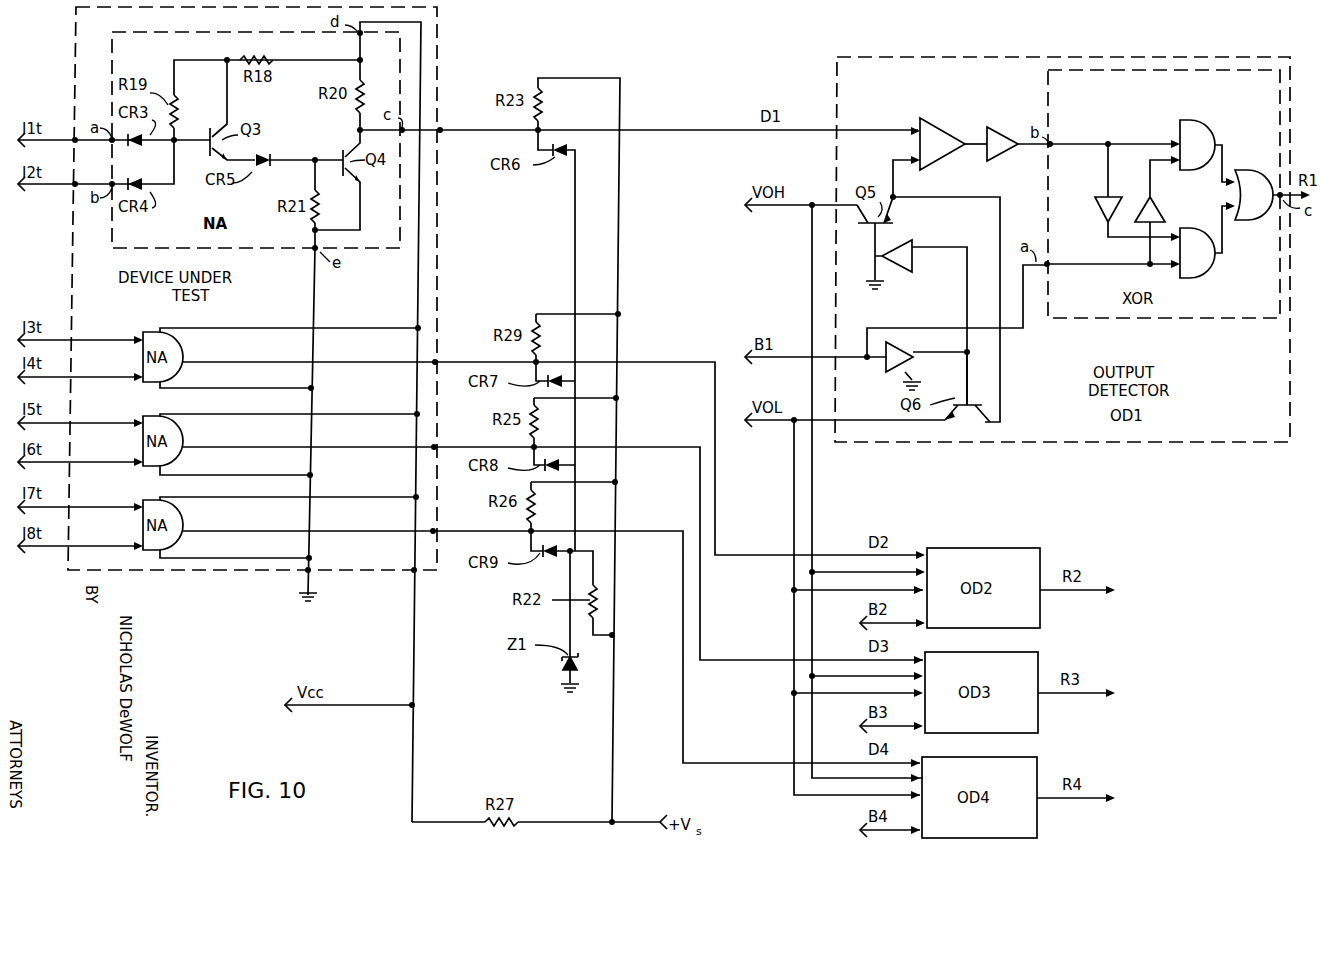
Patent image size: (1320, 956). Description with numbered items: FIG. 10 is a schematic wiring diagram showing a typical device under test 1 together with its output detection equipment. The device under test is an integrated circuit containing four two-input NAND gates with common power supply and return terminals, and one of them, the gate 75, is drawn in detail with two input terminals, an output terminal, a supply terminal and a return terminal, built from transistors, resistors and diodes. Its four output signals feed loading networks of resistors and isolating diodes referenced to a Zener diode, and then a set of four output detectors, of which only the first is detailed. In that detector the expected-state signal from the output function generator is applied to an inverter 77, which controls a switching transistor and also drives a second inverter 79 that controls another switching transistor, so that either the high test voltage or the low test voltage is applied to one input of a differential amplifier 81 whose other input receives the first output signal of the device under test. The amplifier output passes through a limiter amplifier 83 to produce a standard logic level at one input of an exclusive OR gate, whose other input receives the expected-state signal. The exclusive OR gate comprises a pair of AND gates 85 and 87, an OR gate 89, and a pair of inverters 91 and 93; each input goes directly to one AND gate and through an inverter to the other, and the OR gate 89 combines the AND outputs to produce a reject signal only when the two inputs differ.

The device under test 1 is at (72, 282).
The gate 75 is at (370, 255).
The inverter 77 is at (884, 368).
The inverter 79 is at (914, 264).
The differential amplifier 81 is at (932, 120).
The limiter amplifier 83 is at (995, 124).
The AND gate 85 is at (1205, 122).
The AND gate 87 is at (1208, 270).
The OR gate 89 is at (1270, 162).
The inverter 91 is at (1098, 212).
The inverter 93 is at (1160, 210).